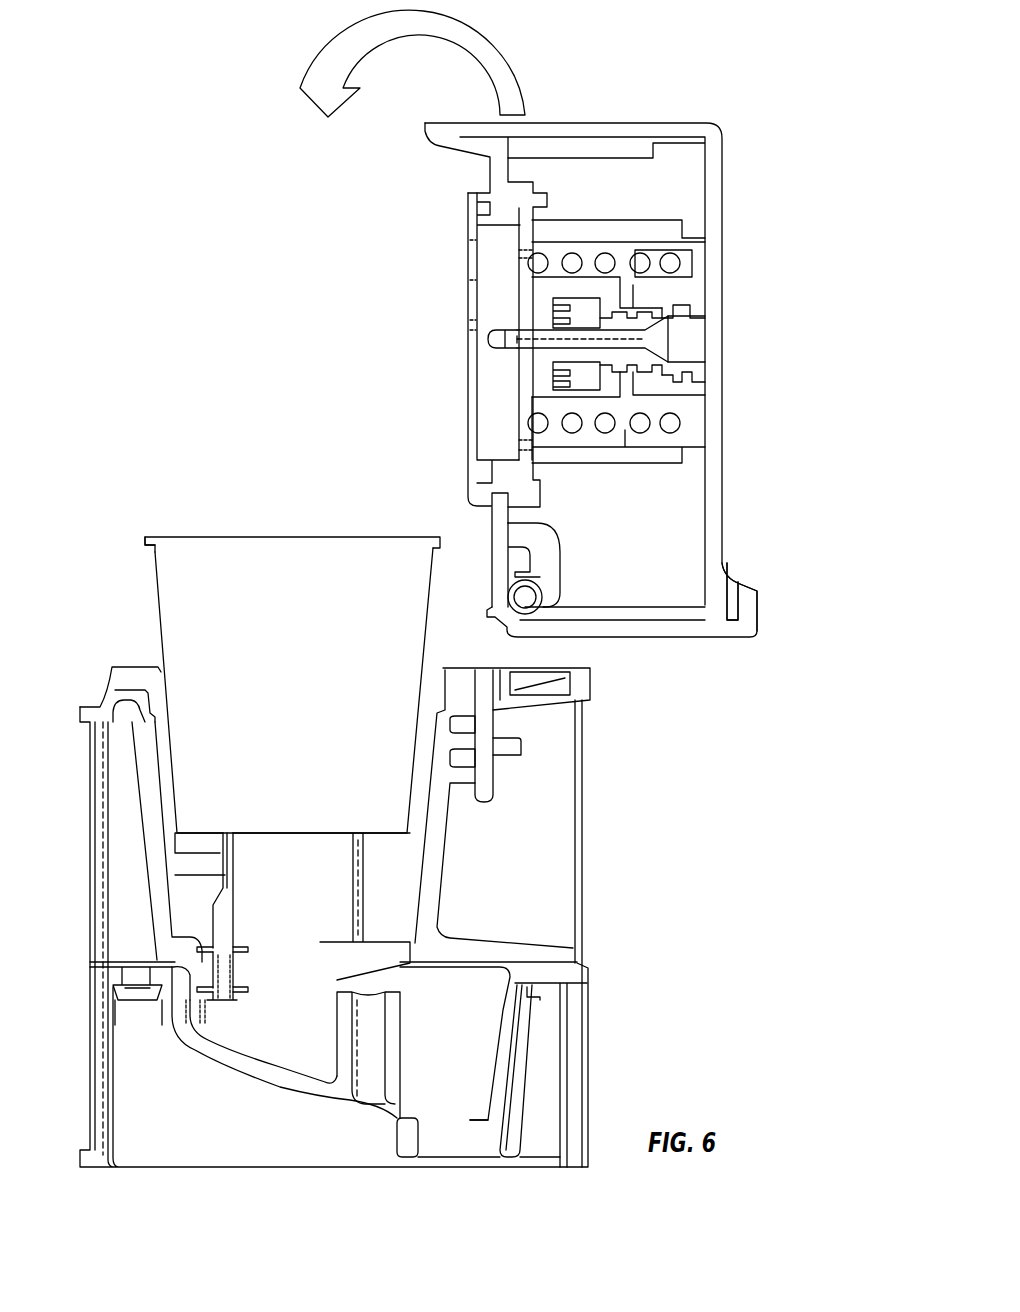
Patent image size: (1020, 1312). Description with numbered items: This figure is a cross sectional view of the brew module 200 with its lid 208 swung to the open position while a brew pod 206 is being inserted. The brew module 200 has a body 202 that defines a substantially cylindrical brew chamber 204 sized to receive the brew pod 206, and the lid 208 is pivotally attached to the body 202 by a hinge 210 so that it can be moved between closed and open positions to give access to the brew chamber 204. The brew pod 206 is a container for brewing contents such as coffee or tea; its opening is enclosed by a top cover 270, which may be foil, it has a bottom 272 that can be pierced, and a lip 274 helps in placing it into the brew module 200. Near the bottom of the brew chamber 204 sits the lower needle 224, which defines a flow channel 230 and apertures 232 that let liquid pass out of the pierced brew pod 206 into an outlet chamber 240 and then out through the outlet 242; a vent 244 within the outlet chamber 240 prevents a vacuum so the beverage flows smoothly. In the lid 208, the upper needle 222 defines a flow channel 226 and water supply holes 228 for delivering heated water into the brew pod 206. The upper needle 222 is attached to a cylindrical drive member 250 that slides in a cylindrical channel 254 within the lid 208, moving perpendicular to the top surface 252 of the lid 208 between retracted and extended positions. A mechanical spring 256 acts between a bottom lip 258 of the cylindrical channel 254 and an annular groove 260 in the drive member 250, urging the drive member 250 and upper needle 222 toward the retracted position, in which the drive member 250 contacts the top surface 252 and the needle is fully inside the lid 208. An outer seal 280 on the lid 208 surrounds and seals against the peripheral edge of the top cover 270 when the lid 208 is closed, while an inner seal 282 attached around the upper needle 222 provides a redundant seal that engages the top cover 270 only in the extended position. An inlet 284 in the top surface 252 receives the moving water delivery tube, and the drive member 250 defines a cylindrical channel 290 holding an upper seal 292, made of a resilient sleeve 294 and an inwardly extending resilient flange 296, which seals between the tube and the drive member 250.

The brew module 200 is at (125, 214).
The body 202 is at (580, 972).
The brew chamber 204 is at (258, 838).
The brew pod 206 is at (296, 698).
The lid 208 is at (742, 605).
The hinge 210 is at (527, 600).
The upper needle 222 is at (547, 330).
The lower needle 224 is at (223, 902).
The flow channel 226 is at (572, 344).
The water supply holes 228 is at (504, 348).
The flow channel 230 is at (219, 990).
The apertures 232 is at (231, 928).
The outlet chamber 240 is at (290, 1037).
The outlet 242 is at (455, 1158).
The vent 244 is at (373, 996).
The drive member 250 is at (700, 265).
The top surface 252 is at (726, 163).
The cylindrical channel 254 is at (624, 435).
The mechanical spring 256 is at (575, 430).
The bottom lip 258 is at (537, 247).
The annular groove 260 is at (688, 404).
The top cover 270 is at (212, 535).
The bottom 272 is at (195, 914).
The lip 274 is at (152, 549).
The outer seal 280 is at (482, 200).
The inner seal 282 is at (585, 300).
The inlet 284 is at (676, 339).
The cylindrical channel 290 is at (692, 308).
The upper seal 292 is at (692, 320).
The resilient sleeve 294 is at (703, 376).
The resilient flange 296 is at (694, 366).